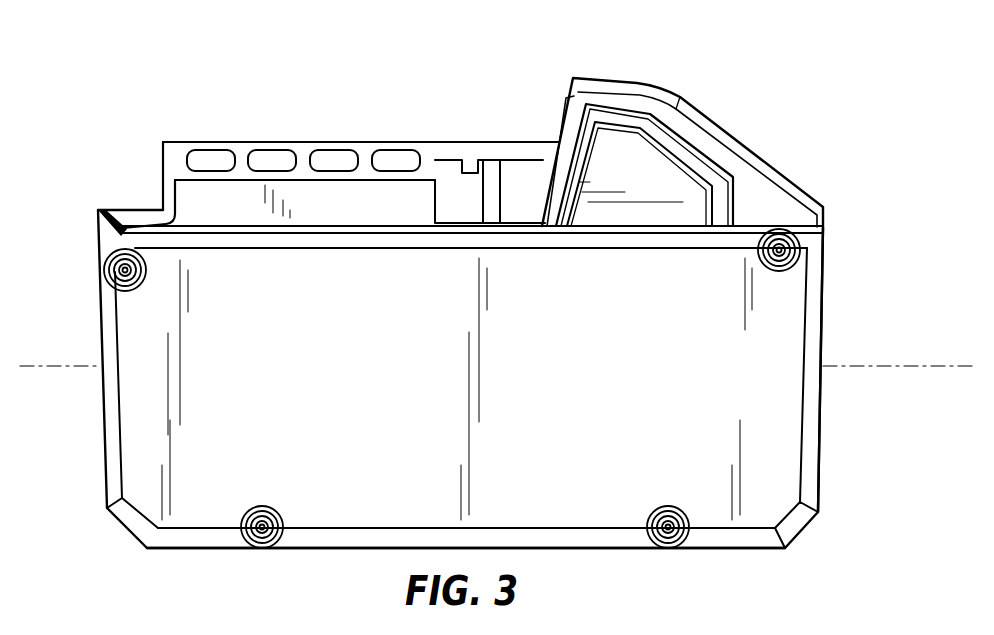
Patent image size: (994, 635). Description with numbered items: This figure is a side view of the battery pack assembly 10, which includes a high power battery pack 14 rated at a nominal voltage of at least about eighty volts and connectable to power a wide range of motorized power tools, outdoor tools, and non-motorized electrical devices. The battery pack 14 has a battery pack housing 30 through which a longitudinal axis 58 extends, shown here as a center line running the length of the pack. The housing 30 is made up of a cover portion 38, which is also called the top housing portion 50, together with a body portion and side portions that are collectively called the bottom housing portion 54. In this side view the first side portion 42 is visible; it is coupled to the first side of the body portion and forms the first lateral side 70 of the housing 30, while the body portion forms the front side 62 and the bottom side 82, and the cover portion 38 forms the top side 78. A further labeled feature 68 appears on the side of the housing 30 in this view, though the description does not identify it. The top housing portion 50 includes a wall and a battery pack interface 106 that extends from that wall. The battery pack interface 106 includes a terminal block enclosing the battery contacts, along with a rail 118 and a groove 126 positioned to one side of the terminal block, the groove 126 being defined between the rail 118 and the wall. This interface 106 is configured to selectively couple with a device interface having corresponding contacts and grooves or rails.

The battery pack assembly 10 is at (175, 77).
The battery pack 14 is at (242, 90).
The battery pack housing 30 is at (707, 88).
The cover portion 38 is at (605, 95).
The first side portion 42 is at (688, 440).
The top housing portion 50 is at (800, 162).
The bottom housing portion 54 is at (843, 462).
The longitudinal axis 58 is at (883, 366).
The front side 62 is at (102, 427).
The right side wall 68 is at (825, 328).
The first lateral side 70 is at (427, 384).
The top side 78 is at (425, 142).
The bottom side 82 is at (610, 548).
The battery pack interface 106 is at (145, 150).
The rail 118 is at (353, 142).
The groove 126 is at (322, 192).